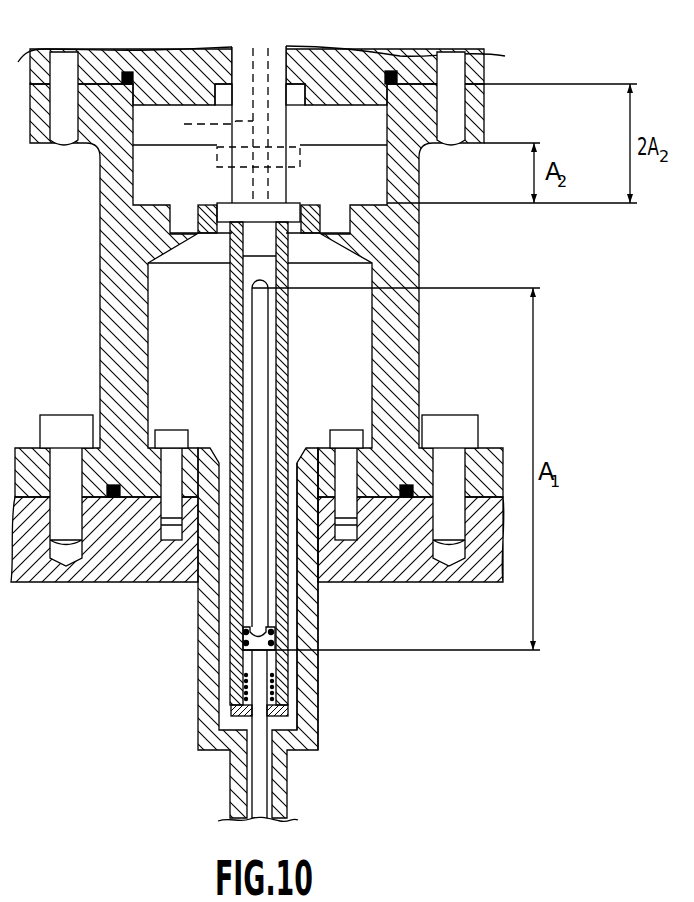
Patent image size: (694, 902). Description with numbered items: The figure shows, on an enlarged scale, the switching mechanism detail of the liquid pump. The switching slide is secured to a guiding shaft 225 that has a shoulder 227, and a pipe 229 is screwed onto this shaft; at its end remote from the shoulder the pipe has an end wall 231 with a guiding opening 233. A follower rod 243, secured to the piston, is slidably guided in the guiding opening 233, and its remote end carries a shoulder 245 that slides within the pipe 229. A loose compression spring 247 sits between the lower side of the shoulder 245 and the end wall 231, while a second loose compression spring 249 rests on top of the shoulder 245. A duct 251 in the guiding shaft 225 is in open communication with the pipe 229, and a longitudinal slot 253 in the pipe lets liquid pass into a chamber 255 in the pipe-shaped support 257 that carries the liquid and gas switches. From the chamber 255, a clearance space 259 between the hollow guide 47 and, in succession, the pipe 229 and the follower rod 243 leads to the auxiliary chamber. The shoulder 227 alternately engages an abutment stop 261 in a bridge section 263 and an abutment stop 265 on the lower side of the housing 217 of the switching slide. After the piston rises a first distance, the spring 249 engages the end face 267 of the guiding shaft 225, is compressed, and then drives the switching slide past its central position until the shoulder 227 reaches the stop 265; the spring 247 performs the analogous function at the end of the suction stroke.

The hollow guide 47 is at (303, 602).
The housing 217 is at (374, 58).
The guiding shaft 225 is at (277, 58).
The shoulder 227 is at (217, 150).
The pipe 229 is at (237, 356).
The end wall 231 is at (278, 712).
The guiding opening 233 is at (236, 712).
The follower rod 243 is at (258, 795).
The shoulder 245 is at (271, 658).
The compression spring 247 is at (244, 692).
The compression spring 249 is at (243, 640).
The duct 251 is at (202, 123).
The longitudinal slot 253 is at (260, 362).
The chamber 255 is at (163, 313).
The pipe-shaped support 257 is at (398, 305).
The clearance space 259 is at (218, 598).
The abutment stop 261 is at (297, 230).
The bridge section 263 is at (210, 233).
The abutment stop 265 is at (224, 84).
The end face 267 is at (230, 290).